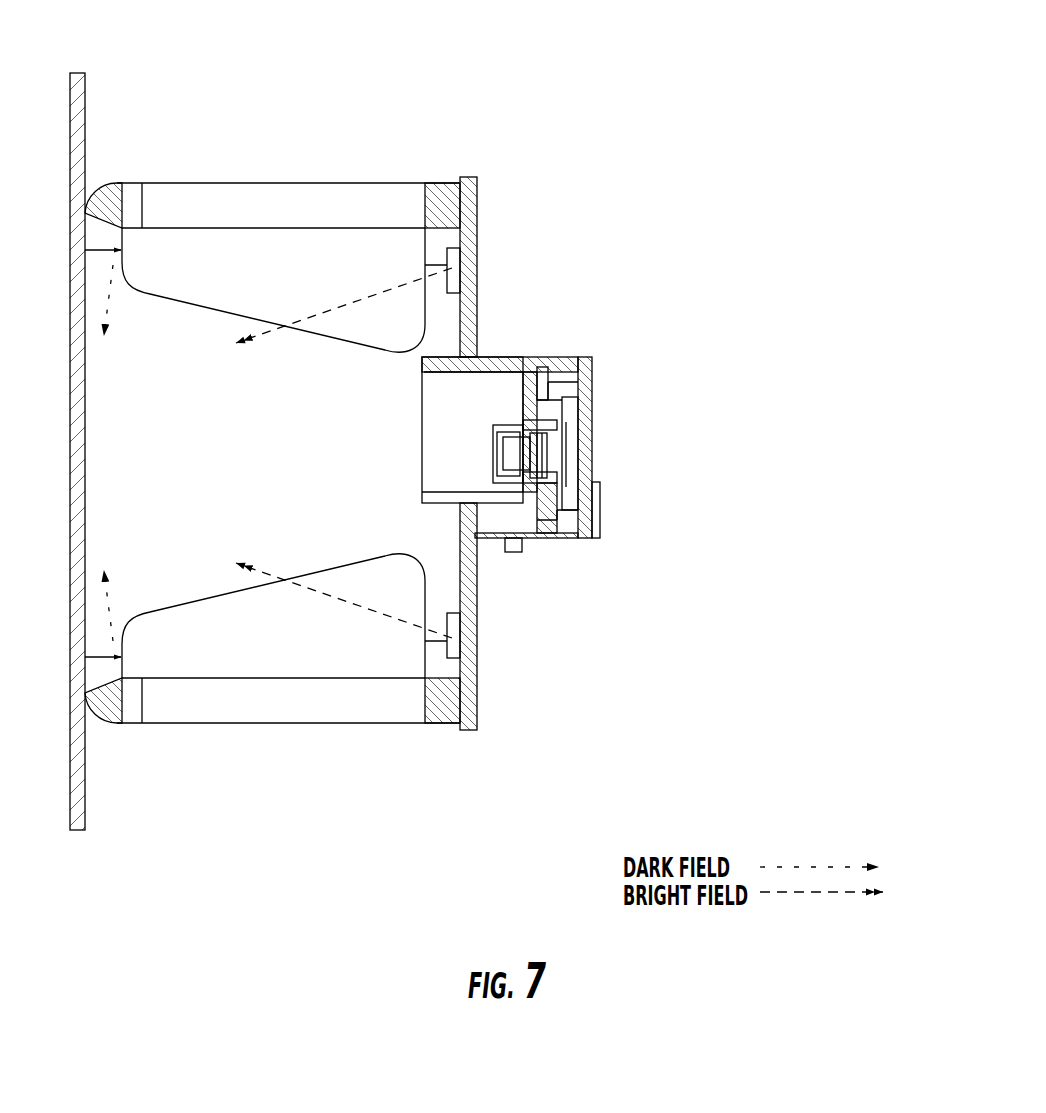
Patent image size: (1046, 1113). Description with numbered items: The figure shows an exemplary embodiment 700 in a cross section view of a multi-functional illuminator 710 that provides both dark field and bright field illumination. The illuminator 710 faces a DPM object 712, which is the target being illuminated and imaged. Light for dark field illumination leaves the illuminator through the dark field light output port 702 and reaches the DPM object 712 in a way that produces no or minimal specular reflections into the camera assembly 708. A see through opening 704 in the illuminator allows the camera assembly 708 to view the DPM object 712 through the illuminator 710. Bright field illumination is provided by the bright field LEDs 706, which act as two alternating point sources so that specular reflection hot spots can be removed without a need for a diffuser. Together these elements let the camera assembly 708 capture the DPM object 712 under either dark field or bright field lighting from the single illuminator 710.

The exemplary embodiment 700 is at (826, 133).
The dark field light output port 702 is at (120, 200).
The see through opening 704 is at (292, 176).
The bright field LEDs 706 is at (457, 263).
The camera assembly 708 is at (563, 545).
The multi-functional illuminator 710 is at (480, 404).
The DPM object 712 is at (85, 787).